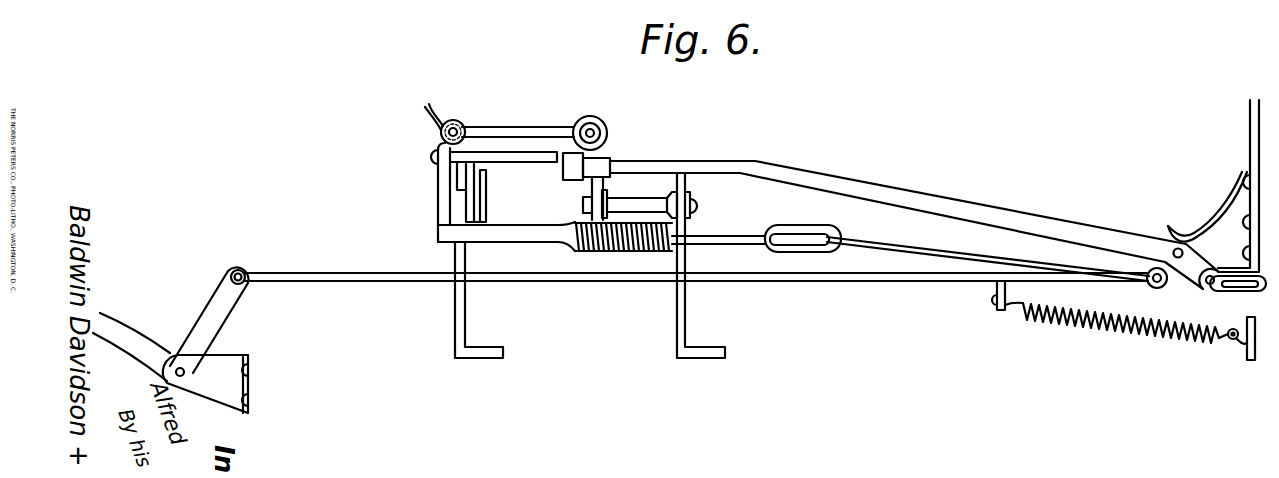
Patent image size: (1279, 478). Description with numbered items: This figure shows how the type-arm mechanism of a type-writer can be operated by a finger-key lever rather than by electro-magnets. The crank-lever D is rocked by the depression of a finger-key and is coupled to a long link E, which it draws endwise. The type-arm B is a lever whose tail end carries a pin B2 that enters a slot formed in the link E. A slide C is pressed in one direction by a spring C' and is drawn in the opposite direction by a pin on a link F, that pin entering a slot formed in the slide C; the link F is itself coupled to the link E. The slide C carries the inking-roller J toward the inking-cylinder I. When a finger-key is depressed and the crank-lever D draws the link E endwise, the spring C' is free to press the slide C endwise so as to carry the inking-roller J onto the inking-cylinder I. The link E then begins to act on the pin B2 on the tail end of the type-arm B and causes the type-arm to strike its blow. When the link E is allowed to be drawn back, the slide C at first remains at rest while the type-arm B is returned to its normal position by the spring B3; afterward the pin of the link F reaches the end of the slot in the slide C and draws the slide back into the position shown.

The inking-roller J is at (608, 120).
The inking-cylinder I is at (503, 179).
The type-arm B is at (641, 168).
The slide C is at (639, 231).
The spring C' is at (623, 249).
The link F is at (923, 236).
The link E is at (822, 283).
The pin B2 is at (1200, 293).
The spring B3 is at (1108, 330).
The crank-lever D is at (171, 340).